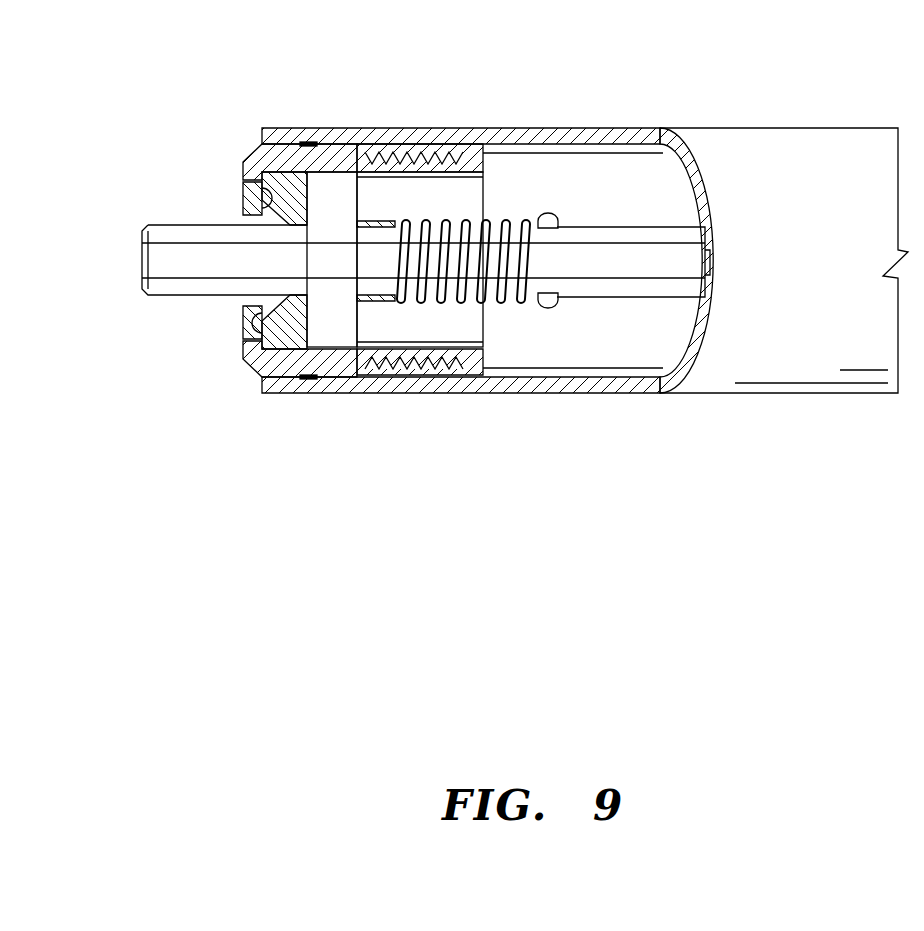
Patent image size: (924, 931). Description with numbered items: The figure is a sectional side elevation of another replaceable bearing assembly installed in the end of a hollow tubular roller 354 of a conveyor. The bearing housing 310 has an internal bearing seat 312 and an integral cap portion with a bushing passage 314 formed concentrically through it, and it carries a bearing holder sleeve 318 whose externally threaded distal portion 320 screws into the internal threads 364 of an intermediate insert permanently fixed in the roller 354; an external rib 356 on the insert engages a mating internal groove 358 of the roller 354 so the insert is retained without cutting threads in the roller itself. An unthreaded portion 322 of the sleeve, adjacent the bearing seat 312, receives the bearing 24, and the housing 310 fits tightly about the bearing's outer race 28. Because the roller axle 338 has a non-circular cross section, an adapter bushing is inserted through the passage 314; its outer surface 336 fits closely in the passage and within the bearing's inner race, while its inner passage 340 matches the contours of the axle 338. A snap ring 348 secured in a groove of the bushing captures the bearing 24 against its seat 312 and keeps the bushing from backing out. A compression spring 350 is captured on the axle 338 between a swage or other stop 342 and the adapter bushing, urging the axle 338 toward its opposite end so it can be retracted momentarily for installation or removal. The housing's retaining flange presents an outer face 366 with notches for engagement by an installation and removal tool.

The bearing 24 is at (346, 317).
The outer race 28 is at (307, 232).
The bearing housing 310 is at (332, 142).
The bearing seat 312 is at (360, 195).
The bushing passage 314 is at (262, 222).
The bearing holder sleeve 318 is at (352, 160).
The externally threaded distal portion 320 is at (455, 160).
The unthreaded portion 322 is at (333, 395).
The outer surface of adapter bushing 336 is at (246, 300).
The roller axle 338 is at (668, 277).
The inner passage 340 is at (321, 218).
The stop 342 is at (552, 222).
The snap ring 348 is at (360, 305).
The compression spring 350 is at (500, 222).
The hollow tubular roller 354 is at (793, 128).
The external circumferential ring or rib 356 is at (316, 142).
The internal circumferential groove 358 is at (263, 378).
The internal threads 364 is at (410, 368).
The outer face 366 is at (247, 352).